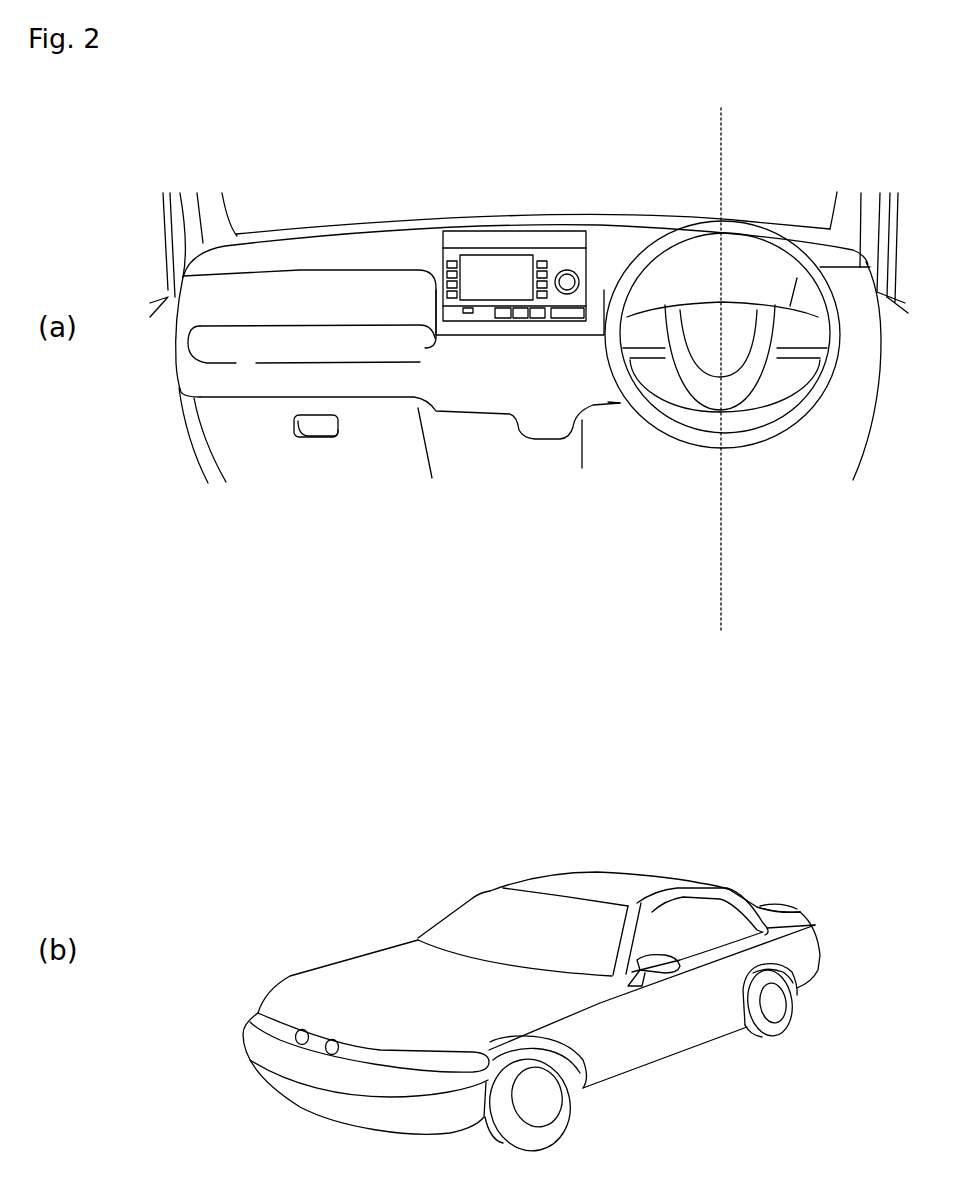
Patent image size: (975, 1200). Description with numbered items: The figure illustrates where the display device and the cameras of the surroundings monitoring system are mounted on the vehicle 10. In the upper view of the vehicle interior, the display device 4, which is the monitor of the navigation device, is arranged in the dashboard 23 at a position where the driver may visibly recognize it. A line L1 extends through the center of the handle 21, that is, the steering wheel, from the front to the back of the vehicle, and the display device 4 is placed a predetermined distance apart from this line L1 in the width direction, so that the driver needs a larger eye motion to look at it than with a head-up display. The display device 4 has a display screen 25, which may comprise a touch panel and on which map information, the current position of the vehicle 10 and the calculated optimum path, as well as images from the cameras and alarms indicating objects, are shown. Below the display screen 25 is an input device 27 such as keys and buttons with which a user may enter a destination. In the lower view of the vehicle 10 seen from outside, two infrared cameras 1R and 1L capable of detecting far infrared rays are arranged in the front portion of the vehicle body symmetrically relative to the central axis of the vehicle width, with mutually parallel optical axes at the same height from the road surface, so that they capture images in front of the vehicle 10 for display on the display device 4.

The display device 4 is at (503, 342).
The display screen 25 is at (480, 282).
The input device 27 is at (563, 321).
The dashboard 23 is at (322, 250).
The handle 21 is at (750, 228).
The line L1 is at (720, 352).
The vehicle 10 is at (556, 873).
The infrared camera 1R is at (295, 1033).
The infrared camera 1L is at (324, 1052).